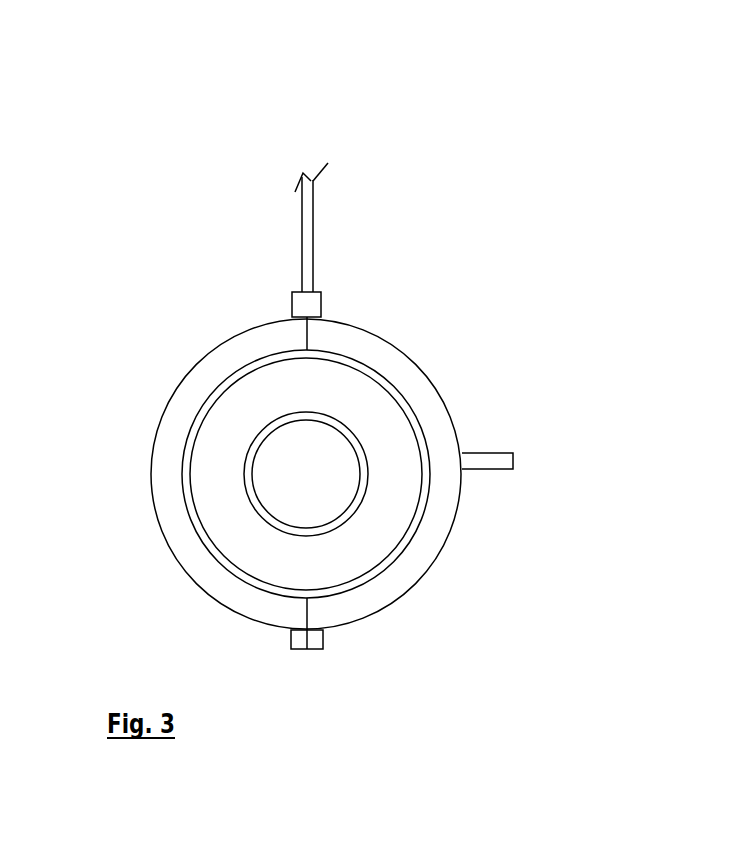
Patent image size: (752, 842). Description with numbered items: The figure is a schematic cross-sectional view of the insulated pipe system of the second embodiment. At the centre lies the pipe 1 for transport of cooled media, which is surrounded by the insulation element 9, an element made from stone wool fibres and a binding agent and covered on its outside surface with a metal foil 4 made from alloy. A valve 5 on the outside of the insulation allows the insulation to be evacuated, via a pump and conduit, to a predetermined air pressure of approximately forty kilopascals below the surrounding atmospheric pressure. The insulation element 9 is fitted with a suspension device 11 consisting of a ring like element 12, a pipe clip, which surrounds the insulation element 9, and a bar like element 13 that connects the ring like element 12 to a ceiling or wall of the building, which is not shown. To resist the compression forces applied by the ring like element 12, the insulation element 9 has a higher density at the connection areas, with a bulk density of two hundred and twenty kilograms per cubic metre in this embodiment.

The pipe 1 is at (362, 452).
The metal foil 4 is at (400, 552).
The valve 5 is at (516, 460).
The insulation element 9 is at (223, 507).
The suspension device 11 is at (366, 331).
The ring like element 12 is at (358, 348).
The bar like element 13 is at (313, 240).